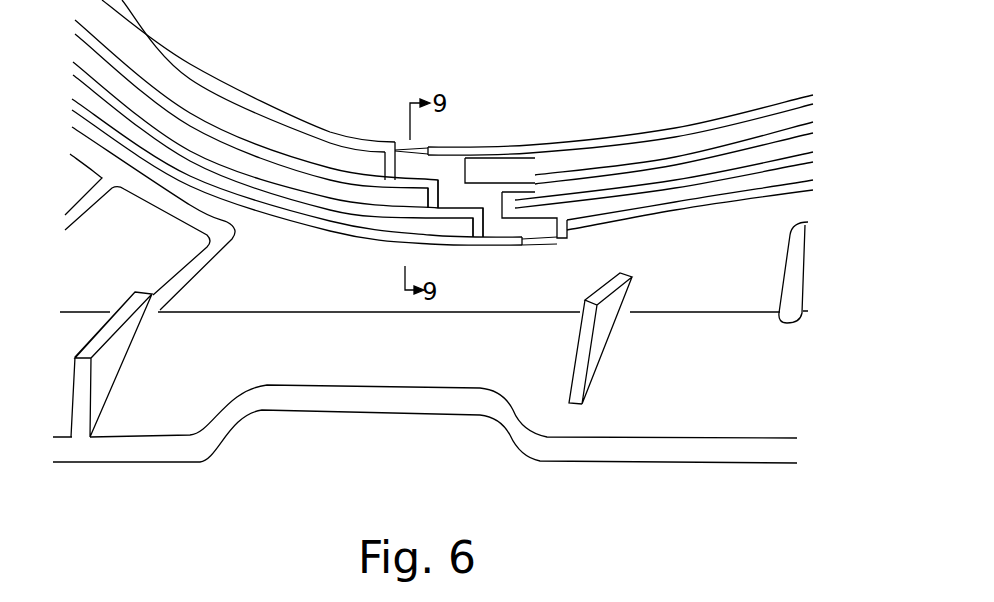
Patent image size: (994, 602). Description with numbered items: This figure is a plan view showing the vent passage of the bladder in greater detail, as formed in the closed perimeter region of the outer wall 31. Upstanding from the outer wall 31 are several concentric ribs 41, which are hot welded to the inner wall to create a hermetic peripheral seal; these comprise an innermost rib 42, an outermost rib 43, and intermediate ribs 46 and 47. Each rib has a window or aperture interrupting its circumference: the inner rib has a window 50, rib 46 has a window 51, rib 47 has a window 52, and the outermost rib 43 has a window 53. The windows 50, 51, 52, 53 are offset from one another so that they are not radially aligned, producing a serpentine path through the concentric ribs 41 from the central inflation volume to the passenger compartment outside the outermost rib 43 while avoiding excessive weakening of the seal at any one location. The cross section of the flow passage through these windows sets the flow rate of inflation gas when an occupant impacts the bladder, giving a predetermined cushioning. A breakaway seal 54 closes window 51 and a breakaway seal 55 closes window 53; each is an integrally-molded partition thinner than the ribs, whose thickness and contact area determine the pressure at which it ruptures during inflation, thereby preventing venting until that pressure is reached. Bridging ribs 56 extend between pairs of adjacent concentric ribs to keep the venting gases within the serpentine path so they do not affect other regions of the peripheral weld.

The outer wall 31 is at (663, 408).
The concentric ribs 41 is at (746, 108).
The innermost rib 42 is at (688, 130).
The outermost rib 43 is at (757, 210).
The intermediate rib 46 is at (650, 168).
The intermediate rib 47 is at (713, 200).
The window 50 is at (403, 143).
The window 51 is at (447, 187).
The window 52 is at (492, 213).
The window 53 is at (533, 247).
The breakaway seal 54 is at (386, 147).
The breakaway seal 55 is at (547, 246).
The bridging ribs 56 is at (475, 227).